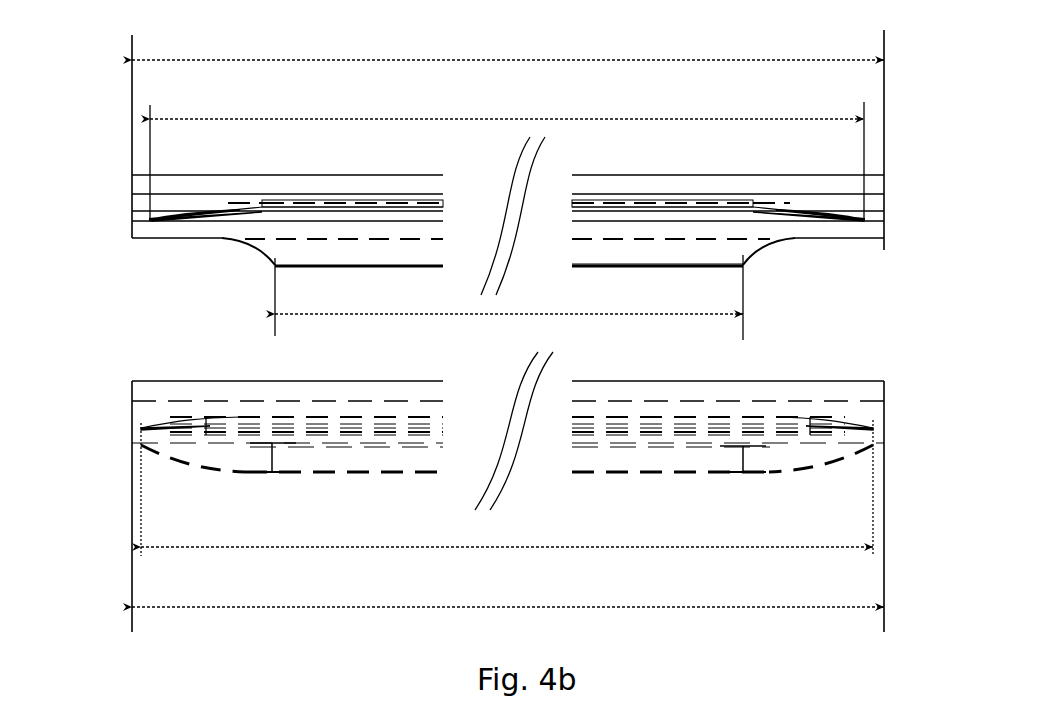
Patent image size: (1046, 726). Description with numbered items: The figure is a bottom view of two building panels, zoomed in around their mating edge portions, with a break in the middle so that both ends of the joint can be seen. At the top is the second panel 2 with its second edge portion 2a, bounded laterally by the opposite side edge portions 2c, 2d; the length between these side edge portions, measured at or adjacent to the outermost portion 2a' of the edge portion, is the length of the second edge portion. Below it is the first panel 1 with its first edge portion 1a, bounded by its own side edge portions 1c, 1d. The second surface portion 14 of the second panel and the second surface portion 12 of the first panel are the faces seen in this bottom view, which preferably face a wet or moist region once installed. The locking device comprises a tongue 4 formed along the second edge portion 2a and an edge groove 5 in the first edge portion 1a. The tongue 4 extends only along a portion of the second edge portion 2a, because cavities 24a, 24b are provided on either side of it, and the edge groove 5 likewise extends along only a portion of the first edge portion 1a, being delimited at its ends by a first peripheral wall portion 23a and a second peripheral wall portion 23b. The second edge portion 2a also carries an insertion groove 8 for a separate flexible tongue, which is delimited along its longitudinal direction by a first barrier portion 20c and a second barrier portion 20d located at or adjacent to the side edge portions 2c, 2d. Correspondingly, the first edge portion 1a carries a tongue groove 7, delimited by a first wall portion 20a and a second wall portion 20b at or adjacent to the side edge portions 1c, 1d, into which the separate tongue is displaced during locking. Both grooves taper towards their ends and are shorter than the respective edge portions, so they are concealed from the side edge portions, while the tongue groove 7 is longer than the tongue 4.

The first panel 1 is at (866, 488).
The first edge portion 1a is at (166, 376).
The side edge portion 1c is at (106, 507).
The side edge portion 1d is at (900, 513).
The second panel 2 is at (872, 94).
The second edge portion 2a is at (546, 309).
The outermost portion of the second edge portion 2a' is at (657, 289).
The side edge portion 2c is at (118, 147).
The side edge portion 2d is at (900, 150).
The tongue 4 is at (677, 278).
The edge groove 5 is at (714, 474).
The tongue groove 7 is at (850, 416).
The insertion groove 8 is at (810, 202).
The second surface portion 12 is at (281, 531).
The second surface portion 14 is at (366, 132).
The first wall portion 20a is at (128, 424).
The second wall portion 20b is at (880, 427).
The first barrier portion 20c is at (128, 198).
The second barrier portion 20d is at (886, 200).
The first peripheral wall portion 23a is at (128, 450).
The second peripheral wall portion 23b is at (882, 446).
The cavity 24a is at (218, 253).
The cavity 24b is at (806, 253).